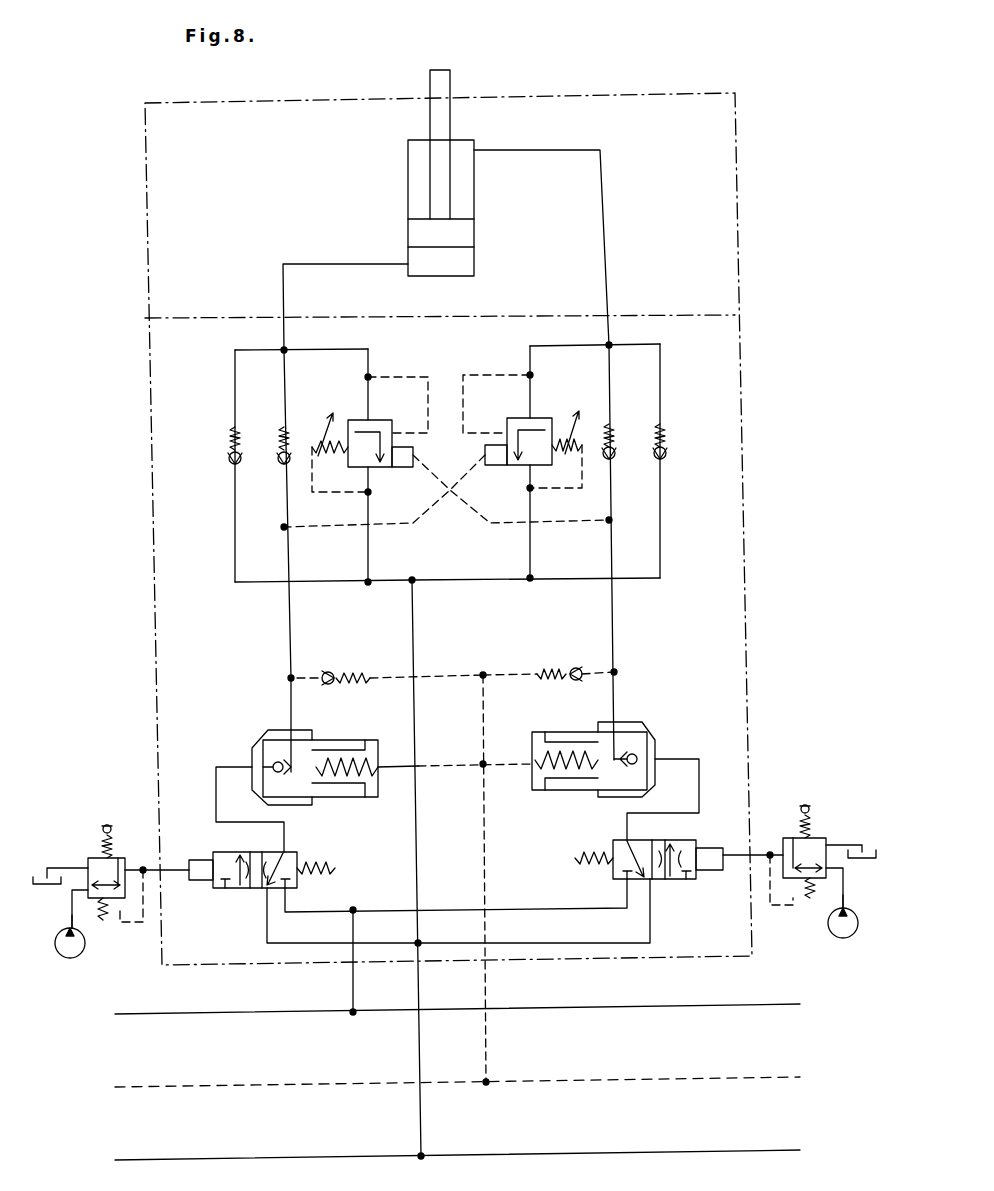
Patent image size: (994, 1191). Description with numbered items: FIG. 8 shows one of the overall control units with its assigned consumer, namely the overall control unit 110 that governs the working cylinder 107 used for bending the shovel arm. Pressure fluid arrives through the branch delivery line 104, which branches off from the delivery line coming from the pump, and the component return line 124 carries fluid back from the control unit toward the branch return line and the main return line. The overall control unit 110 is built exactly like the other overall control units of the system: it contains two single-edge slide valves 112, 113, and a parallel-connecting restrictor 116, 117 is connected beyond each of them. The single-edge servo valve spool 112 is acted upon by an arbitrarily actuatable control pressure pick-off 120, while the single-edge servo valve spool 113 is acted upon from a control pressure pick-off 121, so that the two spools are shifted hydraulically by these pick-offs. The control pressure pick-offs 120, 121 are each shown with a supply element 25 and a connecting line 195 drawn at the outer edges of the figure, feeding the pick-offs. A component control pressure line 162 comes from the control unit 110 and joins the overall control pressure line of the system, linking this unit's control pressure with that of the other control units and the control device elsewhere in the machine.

The working cylinder 107 is at (408, 200).
The overall control unit 110 is at (742, 431).
The parallel-connecting restrictor 116 is at (267, 740).
The parallel-connecting restrictor 117 is at (645, 733).
The single-edge slide valve 112 is at (234, 888).
The single-edge slide valve 113 is at (678, 881).
The control pressure pick-off 120 is at (88, 858).
The control pressure pick-off 121 is at (826, 838).
The pump pressure line 195 is at (70, 915).
The pump 25 is at (78, 957).
The branch delivery line 104 is at (352, 986).
The component return line 124 is at (418, 1058).
The component control pressure line 162 is at (488, 1049).